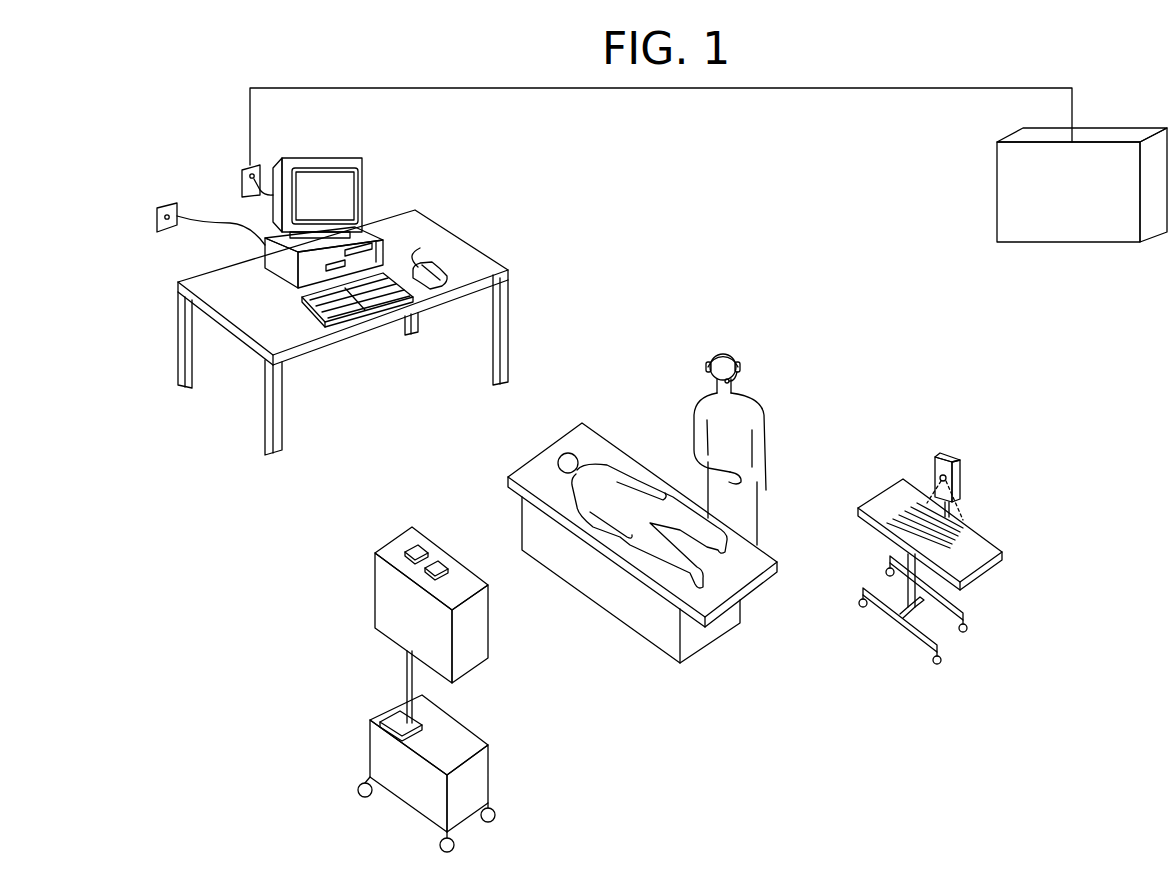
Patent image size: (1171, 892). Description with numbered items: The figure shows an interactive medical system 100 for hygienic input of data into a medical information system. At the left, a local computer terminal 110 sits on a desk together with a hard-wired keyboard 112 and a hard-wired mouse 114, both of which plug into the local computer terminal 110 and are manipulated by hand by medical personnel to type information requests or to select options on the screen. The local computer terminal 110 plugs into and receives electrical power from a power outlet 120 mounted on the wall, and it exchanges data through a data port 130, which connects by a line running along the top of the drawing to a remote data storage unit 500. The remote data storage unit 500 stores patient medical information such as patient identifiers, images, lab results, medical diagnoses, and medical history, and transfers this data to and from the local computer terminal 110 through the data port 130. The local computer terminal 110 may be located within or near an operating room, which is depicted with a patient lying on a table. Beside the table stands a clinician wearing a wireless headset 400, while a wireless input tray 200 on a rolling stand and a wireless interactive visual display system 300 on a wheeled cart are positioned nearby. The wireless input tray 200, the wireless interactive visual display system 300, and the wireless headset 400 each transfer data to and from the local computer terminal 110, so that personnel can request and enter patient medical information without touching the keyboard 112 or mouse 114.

The interactive medical system 100 is at (779, 695).
The local computer terminal 110 is at (362, 162).
The hard-wired keyboard 112 is at (370, 310).
The hard-wired mouse 114 is at (383, 247).
The power outlet 120 is at (157, 223).
The data port 130 is at (260, 168).
The wireless input tray 200 is at (976, 529).
The wireless interactive visual display system 300 is at (517, 620).
The wireless headset 400 is at (762, 410).
The remote data storage unit 500 is at (997, 193).